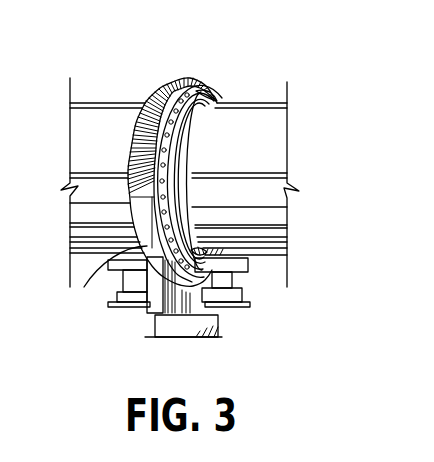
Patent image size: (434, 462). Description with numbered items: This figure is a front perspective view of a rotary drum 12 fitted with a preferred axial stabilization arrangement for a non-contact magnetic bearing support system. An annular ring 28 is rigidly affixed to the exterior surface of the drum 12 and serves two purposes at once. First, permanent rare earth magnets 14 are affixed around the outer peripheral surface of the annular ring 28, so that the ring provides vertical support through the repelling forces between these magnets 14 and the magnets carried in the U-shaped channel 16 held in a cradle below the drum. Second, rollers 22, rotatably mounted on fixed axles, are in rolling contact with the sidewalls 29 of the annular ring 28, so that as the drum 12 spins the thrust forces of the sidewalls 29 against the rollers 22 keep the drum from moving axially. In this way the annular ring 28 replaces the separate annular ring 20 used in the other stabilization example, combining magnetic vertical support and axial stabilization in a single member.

The rotary drum 12 is at (240, 123).
The magnets 14 is at (173, 82).
The annular ring 28 is at (214, 97).
The sidewalls 29 is at (140, 247).
The U-shaped channel 16 is at (155, 290).
The annular ring 20 is at (248, 258).
The rollers 22 is at (250, 268).